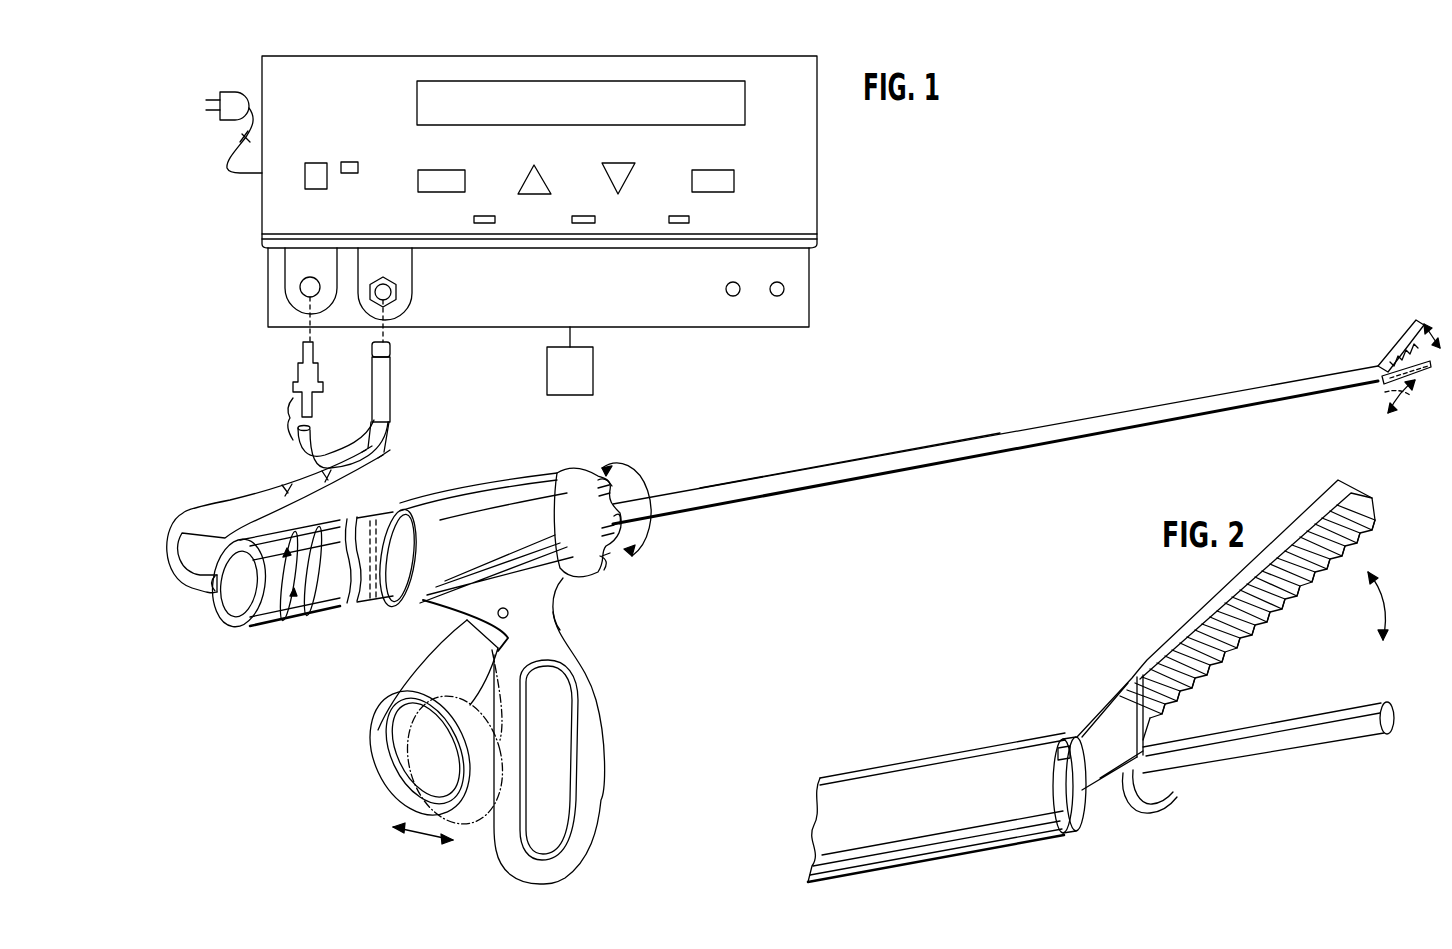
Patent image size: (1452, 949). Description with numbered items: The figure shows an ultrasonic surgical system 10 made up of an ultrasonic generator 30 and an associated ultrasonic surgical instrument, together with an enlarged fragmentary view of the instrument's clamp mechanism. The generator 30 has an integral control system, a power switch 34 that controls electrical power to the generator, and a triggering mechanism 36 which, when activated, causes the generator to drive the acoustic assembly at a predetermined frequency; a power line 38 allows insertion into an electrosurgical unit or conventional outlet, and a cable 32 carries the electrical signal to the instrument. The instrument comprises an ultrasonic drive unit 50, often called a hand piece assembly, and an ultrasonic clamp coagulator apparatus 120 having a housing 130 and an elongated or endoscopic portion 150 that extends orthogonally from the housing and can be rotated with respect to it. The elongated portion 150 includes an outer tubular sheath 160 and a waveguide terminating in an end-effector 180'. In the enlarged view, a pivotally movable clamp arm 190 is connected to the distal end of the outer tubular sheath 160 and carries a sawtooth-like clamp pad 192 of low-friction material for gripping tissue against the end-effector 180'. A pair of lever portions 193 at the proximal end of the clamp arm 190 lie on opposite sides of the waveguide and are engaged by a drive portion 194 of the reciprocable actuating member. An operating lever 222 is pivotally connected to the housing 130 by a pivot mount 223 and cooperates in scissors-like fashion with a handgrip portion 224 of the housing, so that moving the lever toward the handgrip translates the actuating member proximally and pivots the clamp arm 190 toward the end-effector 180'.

In FIG. 1, the surgical system 10 is at (930, 232).
In FIG. 1, the ultrasonic generator 30 is at (818, 183).
In FIG. 1, the cable 32 is at (247, 483).
In FIG. 1, the power switch 34 is at (303, 173).
In FIG. 1, the triggering mechanism 36 is at (570, 361).
In FIG. 1, the power line 38 is at (250, 96).
In FIG. 1, the ultrasonic drive unit 50 is at (317, 625).
In FIG. 1, the ultrasonic clamp coagulator apparatus 120 is at (603, 453).
In FIG. 1, the housing 130 is at (562, 587).
In FIG. 1, the elongated portion 150 is at (830, 463).
In FIG. 1, the outer tubular sheath 160 is at (1065, 432).
In FIG. 2, the outer tubular sheath 160 is at (929, 754).
In FIG. 2, the end-effector 180' is at (1268, 752).
In FIG. 1, the clamp arm 190 is at (1398, 340).
In FIG. 2, the clamp arm 190 is at (1207, 607).
In FIG. 2, the clamp pad 192 is at (1278, 640).
In FIG. 2, the lever portions 193 is at (1167, 783).
In FIG. 2, the drive portion 194 is at (1142, 818).
In FIG. 1, the operating lever 222 is at (373, 740).
In FIG. 1, the pivot mount 223 is at (508, 613).
In FIG. 1, the handgrip portion 224 is at (595, 733).